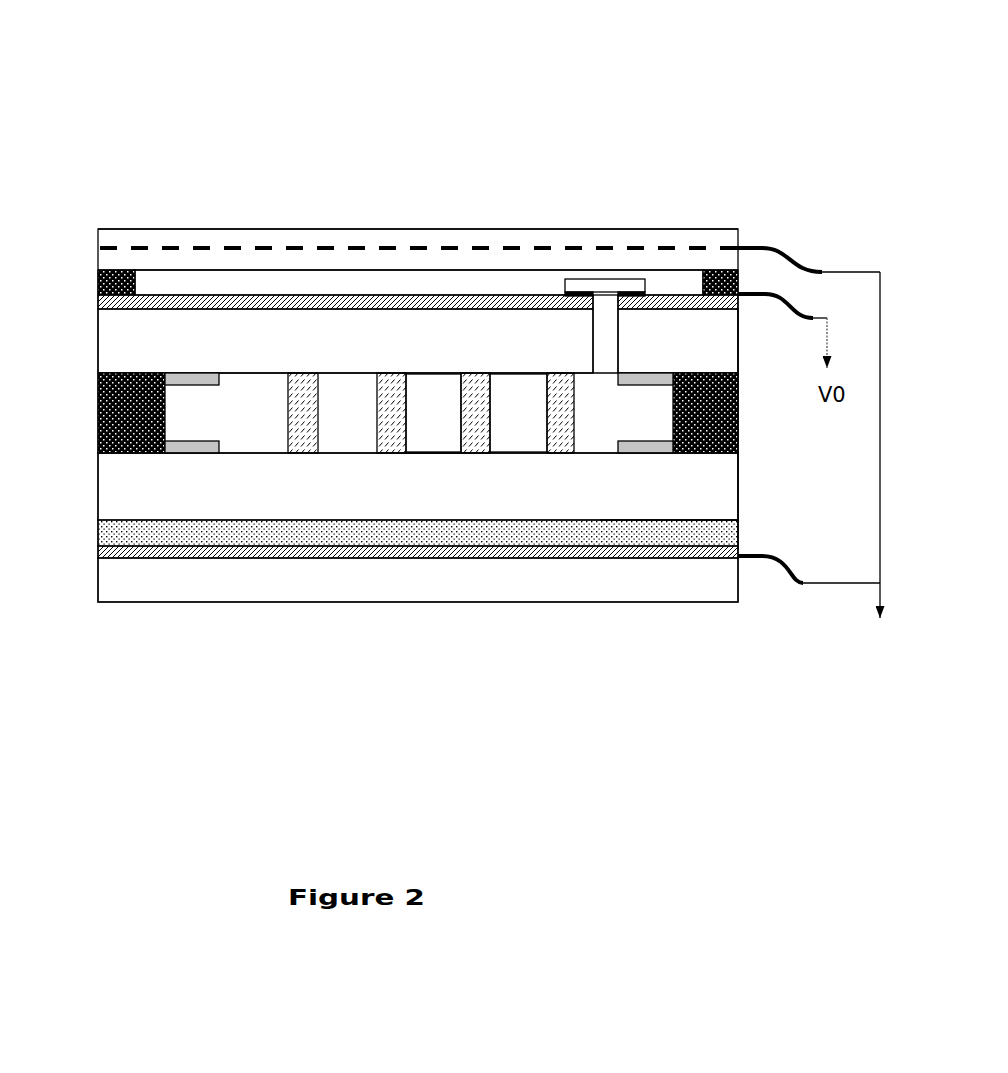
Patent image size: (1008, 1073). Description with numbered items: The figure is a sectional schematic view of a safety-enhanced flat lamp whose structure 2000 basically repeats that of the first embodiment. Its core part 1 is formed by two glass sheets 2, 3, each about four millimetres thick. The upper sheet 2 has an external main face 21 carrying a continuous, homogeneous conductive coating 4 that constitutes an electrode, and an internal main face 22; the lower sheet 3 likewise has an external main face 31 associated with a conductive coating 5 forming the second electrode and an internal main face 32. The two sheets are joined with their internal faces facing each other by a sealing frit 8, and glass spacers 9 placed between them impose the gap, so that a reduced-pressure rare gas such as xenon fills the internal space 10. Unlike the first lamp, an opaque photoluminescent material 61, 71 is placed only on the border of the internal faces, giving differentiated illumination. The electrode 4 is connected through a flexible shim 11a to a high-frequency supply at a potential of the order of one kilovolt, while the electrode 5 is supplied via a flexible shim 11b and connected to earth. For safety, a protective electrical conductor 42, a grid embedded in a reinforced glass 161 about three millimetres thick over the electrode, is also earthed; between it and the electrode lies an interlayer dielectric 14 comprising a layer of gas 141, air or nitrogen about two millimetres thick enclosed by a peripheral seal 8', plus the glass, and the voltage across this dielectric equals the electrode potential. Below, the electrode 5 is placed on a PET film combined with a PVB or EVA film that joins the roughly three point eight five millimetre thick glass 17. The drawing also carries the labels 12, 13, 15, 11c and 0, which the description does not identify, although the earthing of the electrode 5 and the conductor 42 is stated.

The structure of the lamp 2000 is at (584, 81).
The protective electrical conductor 42 is at (722, 248).
The reinforced glass 161 is at (418, 232).
The interlayer dielectric 14 is at (93, 300).
The layer of gas 141 is at (419, 244).
The peripheral seal 8' is at (413, 235).
The contact pad 13 is at (599, 224).
The external main face 21 is at (345, 209).
The conductive coating 4 is at (678, 235).
The glass sheet 2 is at (103, 341).
The via channel 12 is at (534, 266).
The sealing frit 8 is at (396, 413).
The opaque photoluminescent material 61 is at (419, 264).
The opaque photoluminescent material 71 is at (419, 550).
The glass spacers 9 is at (431, 513).
The internal space 10 is at (507, 513).
The internal main face 22 is at (441, 381).
The internal main face 32 is at (434, 446).
The glass sheet 3 is at (398, 520).
The lower electrode layer 15 is at (418, 591).
The external main face 31 is at (669, 606).
The conductive coating 5 is at (418, 612).
The glass 17 is at (418, 630).
The upper electrode lead 11c is at (773, 245).
The flexible shim 11a is at (785, 319).
The flexible shim 11b is at (765, 573).
The part 1 is at (763, 550).
The ground potential 0 is at (874, 468).